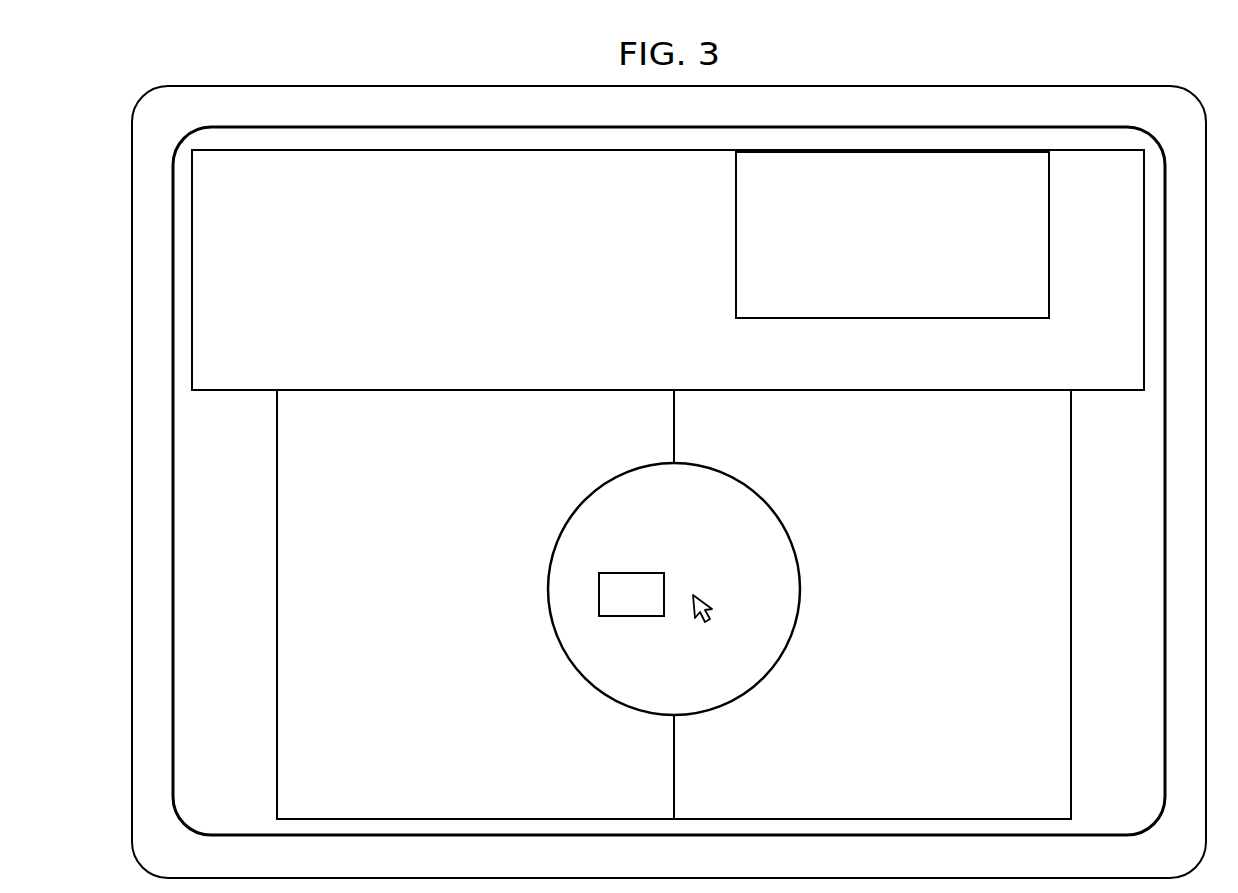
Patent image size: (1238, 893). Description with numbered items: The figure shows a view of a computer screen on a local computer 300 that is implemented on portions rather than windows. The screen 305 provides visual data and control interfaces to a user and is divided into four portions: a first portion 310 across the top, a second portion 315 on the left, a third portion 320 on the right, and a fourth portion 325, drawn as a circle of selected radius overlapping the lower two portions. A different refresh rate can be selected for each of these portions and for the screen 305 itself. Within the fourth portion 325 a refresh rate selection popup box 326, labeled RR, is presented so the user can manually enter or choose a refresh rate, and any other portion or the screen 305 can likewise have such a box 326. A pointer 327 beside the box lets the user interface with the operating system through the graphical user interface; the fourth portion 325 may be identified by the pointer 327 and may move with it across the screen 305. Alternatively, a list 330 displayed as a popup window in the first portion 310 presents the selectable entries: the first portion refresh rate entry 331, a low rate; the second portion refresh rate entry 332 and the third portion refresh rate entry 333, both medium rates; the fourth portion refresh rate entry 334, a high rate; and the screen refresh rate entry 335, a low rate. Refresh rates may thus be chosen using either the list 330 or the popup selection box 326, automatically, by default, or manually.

The local computer 300 is at (460, 72).
The screen 305 is at (248, 559).
The portion 1 310 is at (486, 292).
The portion 2 315 is at (276, 606).
The portion 3 320 is at (1073, 605).
The portion 4 325 is at (574, 667).
The refresh rate selection popup box 326 is at (632, 617).
The pointer 327 is at (707, 598).
The list 330 is at (736, 235).
The portion 1 refresh rate 3 331 is at (1039, 198).
The portion 2 refresh rate 2 332 is at (1039, 224).
The portion 3 refresh rate 2 333 is at (1039, 251).
The portion 4 refresh rate 1 334 is at (1039, 277).
The screen refresh rate 3 335 is at (1039, 303).